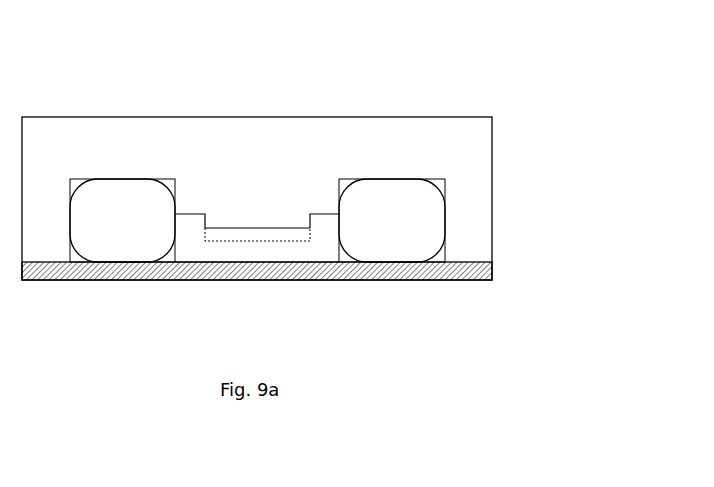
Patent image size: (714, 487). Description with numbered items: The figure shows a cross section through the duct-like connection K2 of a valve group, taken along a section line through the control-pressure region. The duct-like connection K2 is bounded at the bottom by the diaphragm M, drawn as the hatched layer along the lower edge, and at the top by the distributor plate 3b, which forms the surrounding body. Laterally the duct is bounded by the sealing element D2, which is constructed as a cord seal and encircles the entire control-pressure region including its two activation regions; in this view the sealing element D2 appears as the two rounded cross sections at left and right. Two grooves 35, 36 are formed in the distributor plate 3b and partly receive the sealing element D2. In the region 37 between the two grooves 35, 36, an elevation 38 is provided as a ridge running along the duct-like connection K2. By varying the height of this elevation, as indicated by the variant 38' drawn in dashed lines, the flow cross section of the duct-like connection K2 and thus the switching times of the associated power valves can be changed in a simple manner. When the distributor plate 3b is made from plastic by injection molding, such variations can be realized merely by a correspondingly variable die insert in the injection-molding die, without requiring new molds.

The distributor plate 3b is at (475, 150).
The diaphragm M is at (482, 273).
The groove 35 is at (162, 180).
The groove 36 is at (352, 178).
The sealing element D2 is at (113, 195).
The region 37 is at (190, 213).
The elevation 38 is at (256, 295).
The elevation variant 38' is at (264, 295).
The duct-like connection K2 is at (330, 247).